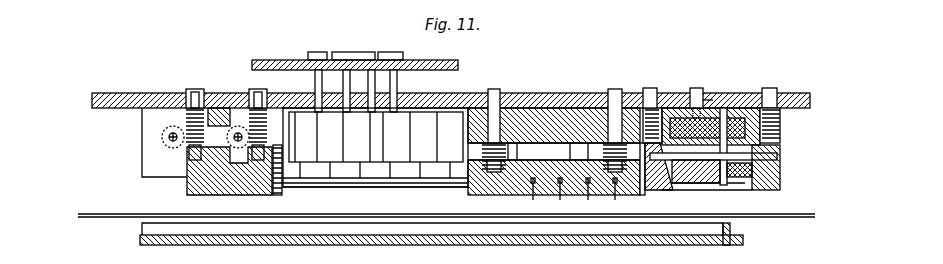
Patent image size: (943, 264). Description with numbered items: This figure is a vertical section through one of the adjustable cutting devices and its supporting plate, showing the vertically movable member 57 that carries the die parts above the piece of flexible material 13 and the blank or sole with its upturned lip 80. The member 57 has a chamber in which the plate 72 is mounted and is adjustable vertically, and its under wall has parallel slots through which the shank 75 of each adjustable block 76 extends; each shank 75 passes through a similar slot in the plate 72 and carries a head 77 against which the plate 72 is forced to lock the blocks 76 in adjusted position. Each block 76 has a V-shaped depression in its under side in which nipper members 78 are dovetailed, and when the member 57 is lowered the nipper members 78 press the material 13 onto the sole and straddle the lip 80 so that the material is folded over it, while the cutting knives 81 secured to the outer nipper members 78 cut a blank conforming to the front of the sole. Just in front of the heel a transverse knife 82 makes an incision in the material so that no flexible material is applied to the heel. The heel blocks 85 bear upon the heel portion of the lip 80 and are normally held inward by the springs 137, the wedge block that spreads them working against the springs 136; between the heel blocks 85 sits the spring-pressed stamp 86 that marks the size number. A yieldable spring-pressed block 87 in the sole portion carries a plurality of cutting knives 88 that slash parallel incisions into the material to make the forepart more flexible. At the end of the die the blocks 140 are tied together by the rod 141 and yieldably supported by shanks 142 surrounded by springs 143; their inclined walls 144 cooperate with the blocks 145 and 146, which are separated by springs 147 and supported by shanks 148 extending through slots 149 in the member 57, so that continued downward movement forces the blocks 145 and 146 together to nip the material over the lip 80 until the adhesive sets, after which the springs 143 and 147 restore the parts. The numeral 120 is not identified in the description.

The piece of material 13 is at (806, 214).
The member 57 is at (542, 100).
The plate 72 is at (264, 62).
The shank 75 is at (392, 86).
The adjustable block 76 is at (375, 159).
The head 77 is at (322, 56).
The nipper member 78 is at (343, 170).
The upturned lip 80 is at (730, 226).
The cutting knife 81 is at (430, 186).
The transverse knife 82 is at (280, 186).
The heel block 85 is at (150, 172).
The spring-pressed stamp 86 is at (188, 190).
The yieldable spring-pressed block 87 is at (480, 184).
The cutting knife 88 is at (538, 186).
The block 120 is at (782, 178).
The spring 136 is at (194, 92).
The spring 137 is at (162, 137).
The block 140 is at (652, 186).
The rod 141 is at (780, 157).
The shank 142 is at (775, 91).
The spring 143 is at (783, 124).
The inclined wall 144 is at (745, 185).
The block 145 is at (657, 90).
The block 146 is at (748, 93).
The spring 147 is at (724, 95).
The shank 148 is at (696, 88).
The slot 149 is at (708, 100).